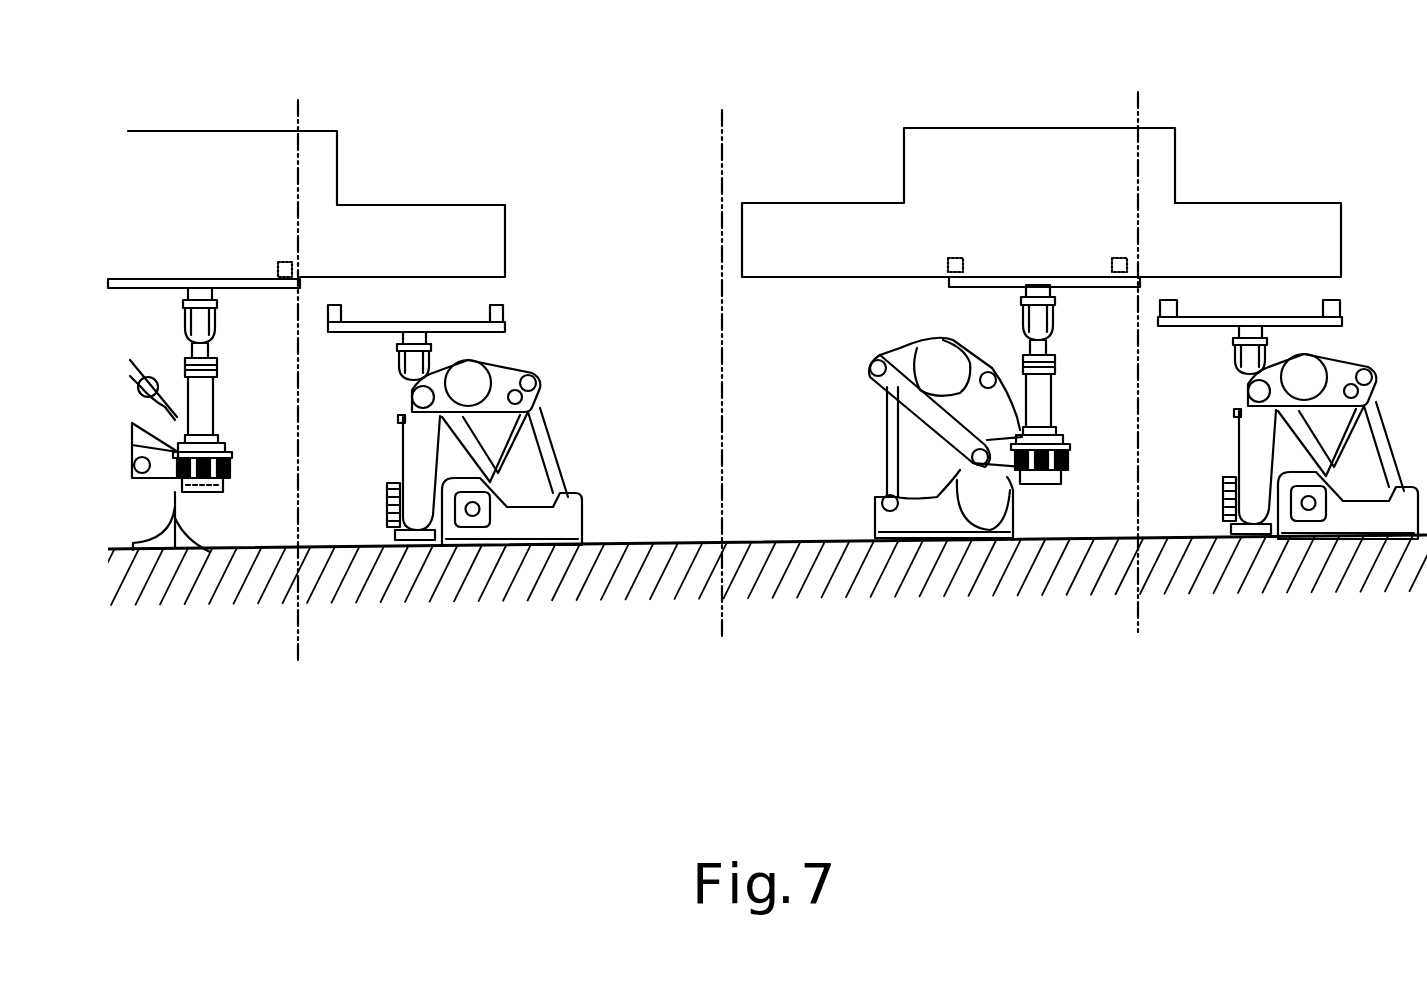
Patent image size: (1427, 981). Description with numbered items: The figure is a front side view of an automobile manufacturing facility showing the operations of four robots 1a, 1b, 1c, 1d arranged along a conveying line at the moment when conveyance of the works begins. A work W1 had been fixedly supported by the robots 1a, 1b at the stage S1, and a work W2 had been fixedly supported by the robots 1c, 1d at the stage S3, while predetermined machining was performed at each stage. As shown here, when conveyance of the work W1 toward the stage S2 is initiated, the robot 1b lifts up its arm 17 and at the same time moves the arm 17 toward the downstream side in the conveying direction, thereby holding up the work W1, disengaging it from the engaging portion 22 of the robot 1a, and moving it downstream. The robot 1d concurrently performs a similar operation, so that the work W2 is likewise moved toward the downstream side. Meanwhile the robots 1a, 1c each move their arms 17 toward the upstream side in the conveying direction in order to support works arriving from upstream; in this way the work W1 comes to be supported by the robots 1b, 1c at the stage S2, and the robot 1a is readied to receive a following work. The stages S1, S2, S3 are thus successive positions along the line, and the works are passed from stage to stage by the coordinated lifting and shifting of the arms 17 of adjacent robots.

The robot 1a is at (1390, 447).
The robot 1b is at (878, 447).
The robot 1c is at (553, 447).
The robot 1d is at (210, 552).
The arm 17 is at (216, 404).
The engaging portion 22 is at (289, 262).
The work W1 is at (1033, 128).
The work W2 is at (317, 131).
The stage S1 is at (1145, 395).
The stage S2 is at (727, 407).
The stage S3 is at (300, 403).